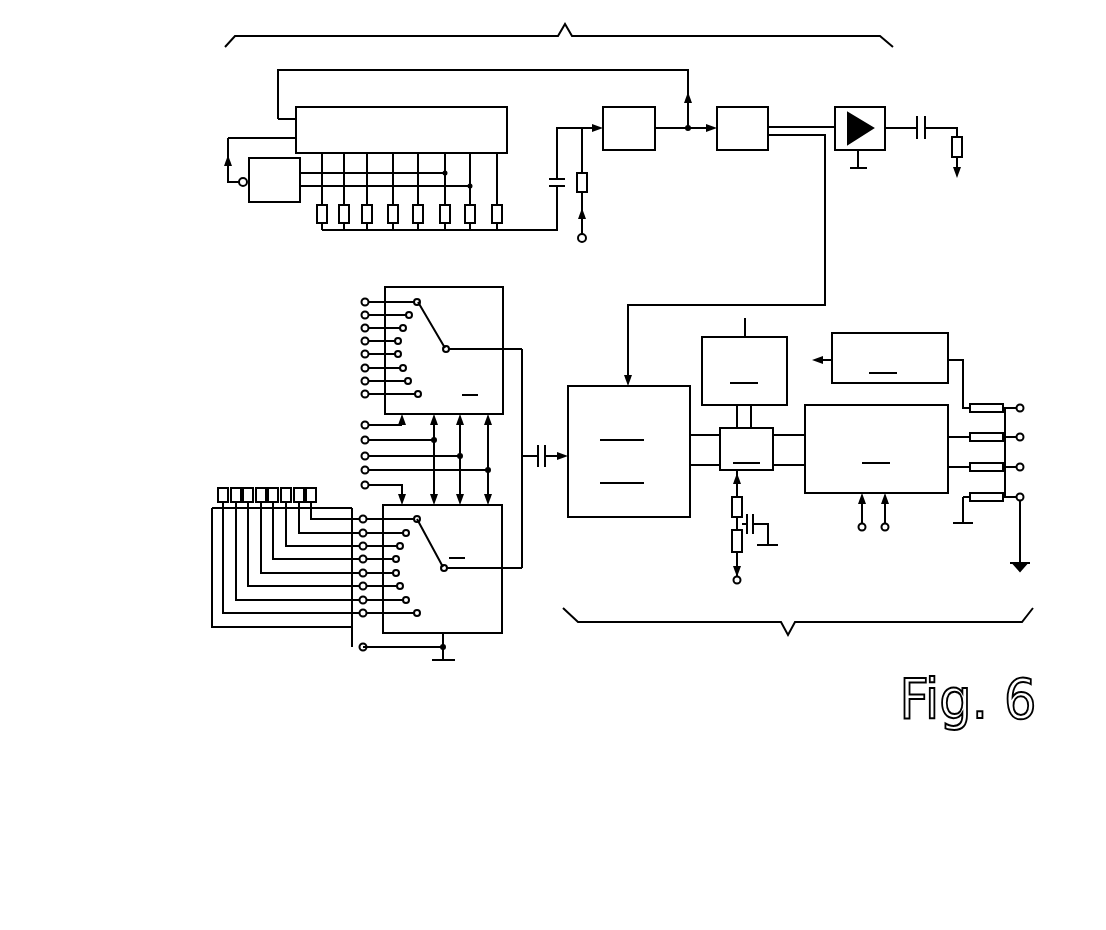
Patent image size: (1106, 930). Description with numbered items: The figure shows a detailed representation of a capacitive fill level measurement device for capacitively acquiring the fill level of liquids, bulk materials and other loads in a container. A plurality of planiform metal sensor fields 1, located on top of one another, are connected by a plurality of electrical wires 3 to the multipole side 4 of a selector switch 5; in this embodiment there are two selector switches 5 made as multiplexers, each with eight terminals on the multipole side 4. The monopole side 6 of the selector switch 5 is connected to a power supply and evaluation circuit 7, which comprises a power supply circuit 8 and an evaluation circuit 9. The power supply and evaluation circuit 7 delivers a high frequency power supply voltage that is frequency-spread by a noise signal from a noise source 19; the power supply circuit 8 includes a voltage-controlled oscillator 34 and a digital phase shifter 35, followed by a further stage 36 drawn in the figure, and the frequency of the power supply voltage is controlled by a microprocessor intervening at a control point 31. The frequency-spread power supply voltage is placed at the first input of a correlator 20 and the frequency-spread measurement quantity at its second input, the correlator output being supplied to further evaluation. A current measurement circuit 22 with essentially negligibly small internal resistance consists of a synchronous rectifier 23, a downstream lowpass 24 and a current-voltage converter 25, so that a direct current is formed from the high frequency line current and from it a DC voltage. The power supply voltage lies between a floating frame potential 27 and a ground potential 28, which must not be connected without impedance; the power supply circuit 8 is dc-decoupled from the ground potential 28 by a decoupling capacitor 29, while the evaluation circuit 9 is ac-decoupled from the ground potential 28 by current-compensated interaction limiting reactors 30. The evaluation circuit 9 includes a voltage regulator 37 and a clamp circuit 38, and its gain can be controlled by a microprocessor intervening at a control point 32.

The sensor fields 1 is at (221, 484).
The electrical wires 3 is at (213, 640).
The multipole side 4 is at (407, 280).
The selector switch 5 is at (443, 460).
The monopole side 6 is at (462, 338).
The power supply and evaluation circuit 7 is at (650, 165).
The power supply circuit 8 is at (559, 23).
The evaluation circuit 9 is at (798, 641).
The noise source 19 is at (302, 225).
The correlator 20 is at (629, 451).
The current measurement circuit 22 is at (787, 500).
The synchronous rectifier 23 is at (629, 451).
The lowpass 24 is at (747, 449).
The current-voltage converter 25 is at (887, 449).
The frame potential 27 is at (860, 172).
The ground potential 28 is at (960, 180).
The decoupling capacitor 29 is at (928, 112).
The current-compensated interaction limiting reactors 30 is at (998, 398).
The control point 31 is at (582, 243).
The control point 32 is at (863, 531).
The voltage-controlled oscillator 34 is at (601, 113).
The digital phase shifter 35 is at (740, 112).
The amplifier 36 is at (848, 112).
The voltage regulator 37 is at (891, 370).
The clamp circuit 38 is at (744, 373).